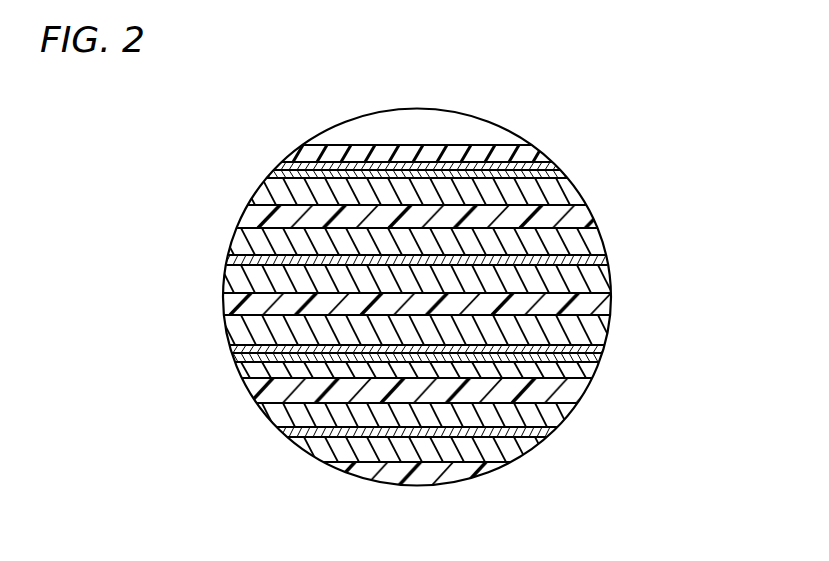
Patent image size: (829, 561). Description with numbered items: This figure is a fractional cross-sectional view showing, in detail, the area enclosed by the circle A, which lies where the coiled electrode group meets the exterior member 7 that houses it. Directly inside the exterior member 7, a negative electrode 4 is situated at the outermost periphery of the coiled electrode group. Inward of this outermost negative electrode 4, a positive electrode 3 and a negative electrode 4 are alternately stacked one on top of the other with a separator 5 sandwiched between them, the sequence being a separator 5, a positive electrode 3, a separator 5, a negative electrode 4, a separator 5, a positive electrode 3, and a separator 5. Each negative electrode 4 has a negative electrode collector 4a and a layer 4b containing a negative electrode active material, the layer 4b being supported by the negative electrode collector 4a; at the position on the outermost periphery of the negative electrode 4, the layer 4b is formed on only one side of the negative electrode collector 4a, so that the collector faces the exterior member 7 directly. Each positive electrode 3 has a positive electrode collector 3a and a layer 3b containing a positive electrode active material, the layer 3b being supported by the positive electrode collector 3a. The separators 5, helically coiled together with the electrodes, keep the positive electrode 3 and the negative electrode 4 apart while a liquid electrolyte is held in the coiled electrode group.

The circled area A is at (332, 147).
The positive electrode 3 is at (672, 213).
The positive electrode collector 3a is at (585, 262).
The layer containing positive electrode active material 3b is at (578, 248).
The negative electrode 4 is at (652, 140).
The negative electrode collector 4a is at (533, 175).
The layer containing negative electrode active material 4b is at (557, 197).
The separator 5 is at (263, 215).
The exterior member 7 is at (533, 158).